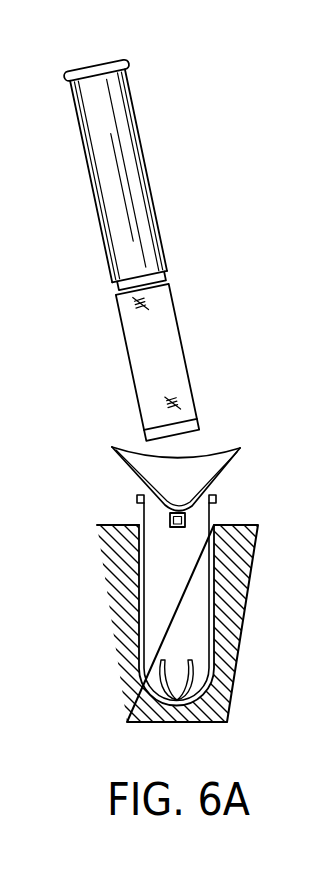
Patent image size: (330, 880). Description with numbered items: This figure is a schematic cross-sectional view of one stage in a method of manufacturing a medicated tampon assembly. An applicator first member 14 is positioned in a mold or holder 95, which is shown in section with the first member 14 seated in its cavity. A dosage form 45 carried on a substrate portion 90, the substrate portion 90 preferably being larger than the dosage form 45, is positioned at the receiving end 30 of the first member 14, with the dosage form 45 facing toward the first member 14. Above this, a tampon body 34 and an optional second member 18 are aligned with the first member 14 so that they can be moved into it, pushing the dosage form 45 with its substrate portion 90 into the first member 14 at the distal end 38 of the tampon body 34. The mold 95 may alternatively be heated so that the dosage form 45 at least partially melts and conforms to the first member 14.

The second member 18 is at (152, 166).
The tampon body 34 is at (167, 312).
The distal end 38 is at (166, 399).
The dosage form 45 is at (178, 511).
The substrate portion 90 is at (124, 469).
The receiving end 30 is at (218, 512).
The applicator first member 14 is at (217, 620).
The mold or holder 95 is at (117, 658).